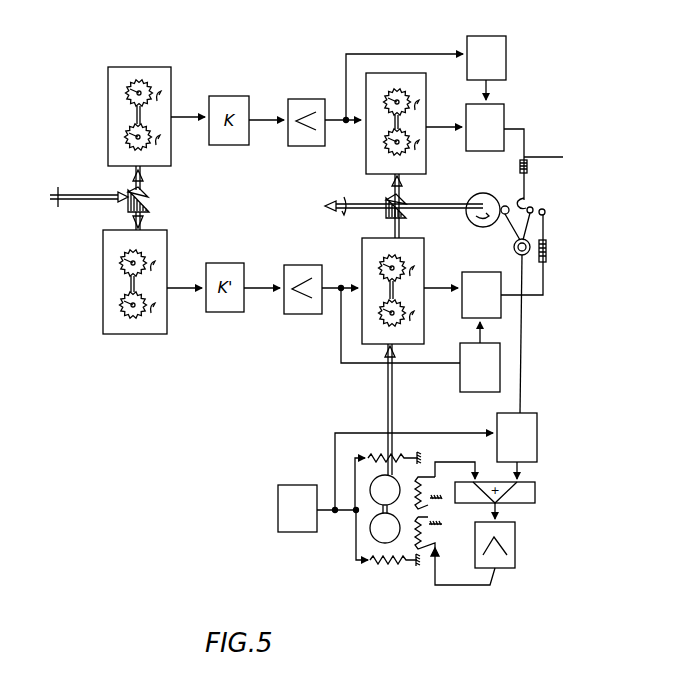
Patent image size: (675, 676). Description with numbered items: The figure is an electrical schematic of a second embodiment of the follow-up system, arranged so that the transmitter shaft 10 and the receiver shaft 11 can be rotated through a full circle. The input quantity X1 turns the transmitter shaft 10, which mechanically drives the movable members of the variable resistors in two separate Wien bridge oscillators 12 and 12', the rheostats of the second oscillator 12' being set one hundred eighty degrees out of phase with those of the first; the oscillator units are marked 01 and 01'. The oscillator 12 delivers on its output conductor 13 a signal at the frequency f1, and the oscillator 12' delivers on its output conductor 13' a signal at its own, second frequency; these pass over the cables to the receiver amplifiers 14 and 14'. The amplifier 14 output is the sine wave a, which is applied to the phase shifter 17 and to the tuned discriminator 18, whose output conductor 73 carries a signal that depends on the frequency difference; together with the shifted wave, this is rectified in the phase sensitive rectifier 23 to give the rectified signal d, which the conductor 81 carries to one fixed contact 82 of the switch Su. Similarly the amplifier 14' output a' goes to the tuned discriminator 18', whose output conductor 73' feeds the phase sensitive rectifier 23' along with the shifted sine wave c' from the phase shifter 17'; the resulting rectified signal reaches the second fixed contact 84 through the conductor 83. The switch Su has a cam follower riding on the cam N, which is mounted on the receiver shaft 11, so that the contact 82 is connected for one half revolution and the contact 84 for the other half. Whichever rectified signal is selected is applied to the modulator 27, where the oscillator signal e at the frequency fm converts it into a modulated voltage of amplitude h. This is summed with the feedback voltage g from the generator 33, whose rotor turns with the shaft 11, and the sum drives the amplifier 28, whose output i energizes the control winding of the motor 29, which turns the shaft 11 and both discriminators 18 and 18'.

The first gear unit 01 is at (130, 51).
The second gear unit 01' is at (118, 351).
The transmitter shaft 10 is at (102, 185).
The input quantity X1 is at (58, 191).
The Wien bridge oscillator 12 is at (157, 121).
The Wien bridge oscillator 12' is at (151, 288).
The output conductor 13 is at (188, 119).
The output conductor 13' is at (184, 289).
The amplifier 14 is at (306, 107).
The amplifier 14' is at (303, 273).
The frequency f1 is at (335, 123).
The sine wave a is at (404, 75).
The sine wave a' is at (392, 339).
The phase shifter 17 is at (503, 58).
The phase shifter 17' is at (465, 374).
The sine wave c' is at (491, 332).
The phase sensitive rectifier 23 is at (505, 125).
The phase sensitive rectifier 23' is at (510, 306).
The tuned discriminator 18 is at (409, 123).
The tuned discriminator 18' is at (403, 280).
The output conductor 73 is at (444, 126).
The output conductor 73' is at (441, 288).
The cam N is at (497, 201).
The conductor 81 is at (524, 145).
The rectified signal d is at (549, 157).
The fixed contact 82 is at (519, 200).
The switch Su is at (531, 247).
The fixed contact 84 is at (545, 212).
The conductor 83 is at (540, 297).
The receiver shaft 11 is at (394, 391).
The modulator 27 is at (537, 428).
The constant frequency signal e is at (443, 427).
The modulated signal amplitude h is at (518, 468).
The generator voltage g is at (463, 462).
The amplifier 28 is at (517, 538).
The frequency fm is at (338, 514).
The generator 33 is at (391, 487).
The motor 29 is at (388, 545).
The alternating current signal i is at (452, 588).